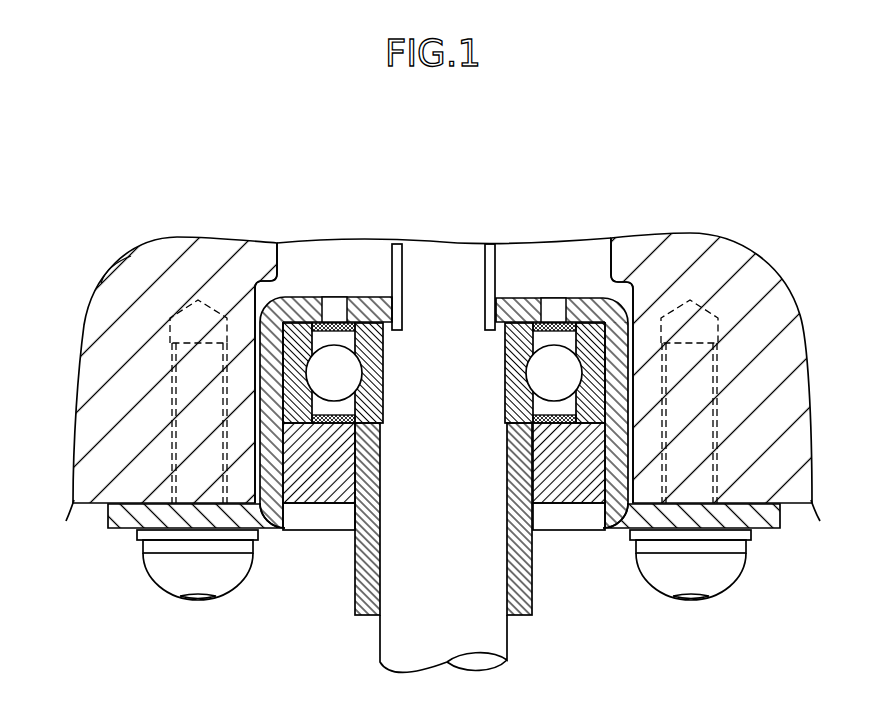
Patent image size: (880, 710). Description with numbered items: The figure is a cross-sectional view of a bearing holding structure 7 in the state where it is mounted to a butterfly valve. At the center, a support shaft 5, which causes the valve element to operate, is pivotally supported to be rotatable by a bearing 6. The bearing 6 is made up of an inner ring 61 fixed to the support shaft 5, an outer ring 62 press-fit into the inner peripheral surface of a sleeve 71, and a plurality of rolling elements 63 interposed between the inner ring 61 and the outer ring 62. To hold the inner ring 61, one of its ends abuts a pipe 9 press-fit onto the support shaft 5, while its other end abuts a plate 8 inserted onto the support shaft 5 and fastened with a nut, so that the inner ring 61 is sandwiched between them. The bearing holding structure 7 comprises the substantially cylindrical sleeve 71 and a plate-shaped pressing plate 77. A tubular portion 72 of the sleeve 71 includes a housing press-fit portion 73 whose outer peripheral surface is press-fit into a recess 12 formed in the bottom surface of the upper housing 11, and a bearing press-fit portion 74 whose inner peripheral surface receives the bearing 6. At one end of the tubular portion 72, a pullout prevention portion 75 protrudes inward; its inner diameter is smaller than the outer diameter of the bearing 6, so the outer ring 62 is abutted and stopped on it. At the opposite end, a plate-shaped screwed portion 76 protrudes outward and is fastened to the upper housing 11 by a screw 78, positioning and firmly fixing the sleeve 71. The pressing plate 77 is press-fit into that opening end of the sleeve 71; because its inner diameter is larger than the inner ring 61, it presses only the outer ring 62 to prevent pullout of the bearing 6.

The support shaft 5 is at (462, 255).
The bearing 6 is at (311, 373).
The bearing holding structure 7 is at (437, 358).
The plate 8 is at (512, 305).
The pipe 9 is at (533, 597).
The upper housing 11 is at (178, 238).
The recess 12 is at (247, 298).
The inner ring 61 is at (350, 340).
The outer ring 62 is at (320, 374).
The rolling elements 63 is at (292, 398).
The sleeve 71 is at (633, 330).
The tubular portion 72 is at (267, 470).
The housing press-fit portion 73 is at (623, 445).
The bearing press-fit portion 74 is at (640, 330).
The pullout prevention portion 75 is at (300, 305).
The screwed portion 76 is at (112, 532).
The pressing plate 77 is at (312, 505).
The screw 78 is at (182, 602).